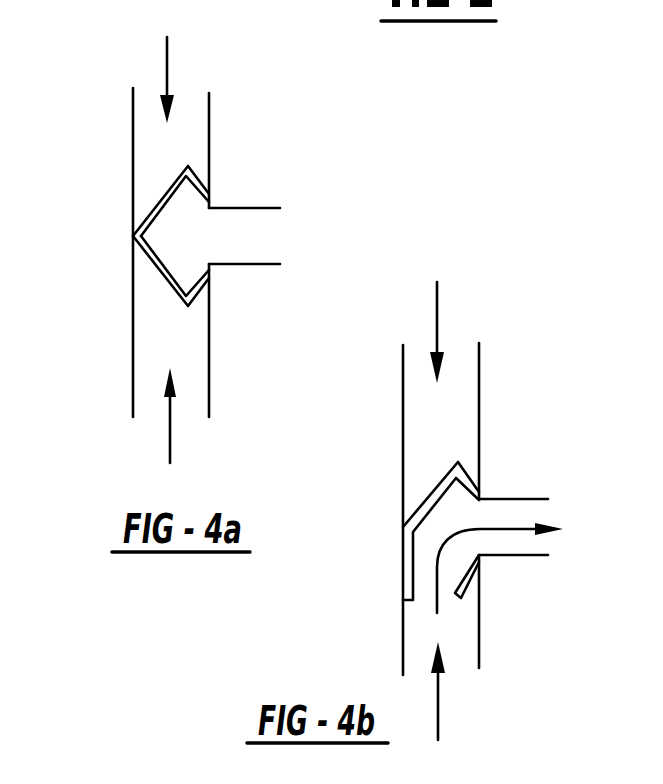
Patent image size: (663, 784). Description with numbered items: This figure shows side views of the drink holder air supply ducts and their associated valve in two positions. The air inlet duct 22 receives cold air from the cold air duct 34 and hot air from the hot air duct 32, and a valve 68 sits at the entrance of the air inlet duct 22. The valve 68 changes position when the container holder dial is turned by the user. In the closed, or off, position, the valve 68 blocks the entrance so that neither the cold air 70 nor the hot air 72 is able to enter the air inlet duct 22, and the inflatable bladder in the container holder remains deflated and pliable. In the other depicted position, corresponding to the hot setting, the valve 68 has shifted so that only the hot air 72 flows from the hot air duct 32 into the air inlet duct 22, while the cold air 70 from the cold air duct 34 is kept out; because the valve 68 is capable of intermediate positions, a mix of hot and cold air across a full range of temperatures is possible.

In FIG. 4a, the air inlet duct 22 is at (257, 207).
In FIG. 4b, the air inlet duct 22 is at (513, 498).
In FIG. 4a, the hot air duct 32 is at (211, 338).
In FIG. 4b, the hot air duct 32 is at (480, 640).
In FIG. 4a, the cold air duct 34 is at (209, 132).
In FIG. 4b, the cold air duct 34 is at (479, 410).
In FIG. 4a, the valve 68 is at (108, 228).
In FIG. 4a, the cold air 70 is at (167, 58).
In FIG. 4b, the cold air 70 is at (437, 323).
In FIG. 4a, the hot air 72 is at (167, 438).
In FIG. 4b, the hot air 72 is at (503, 530).